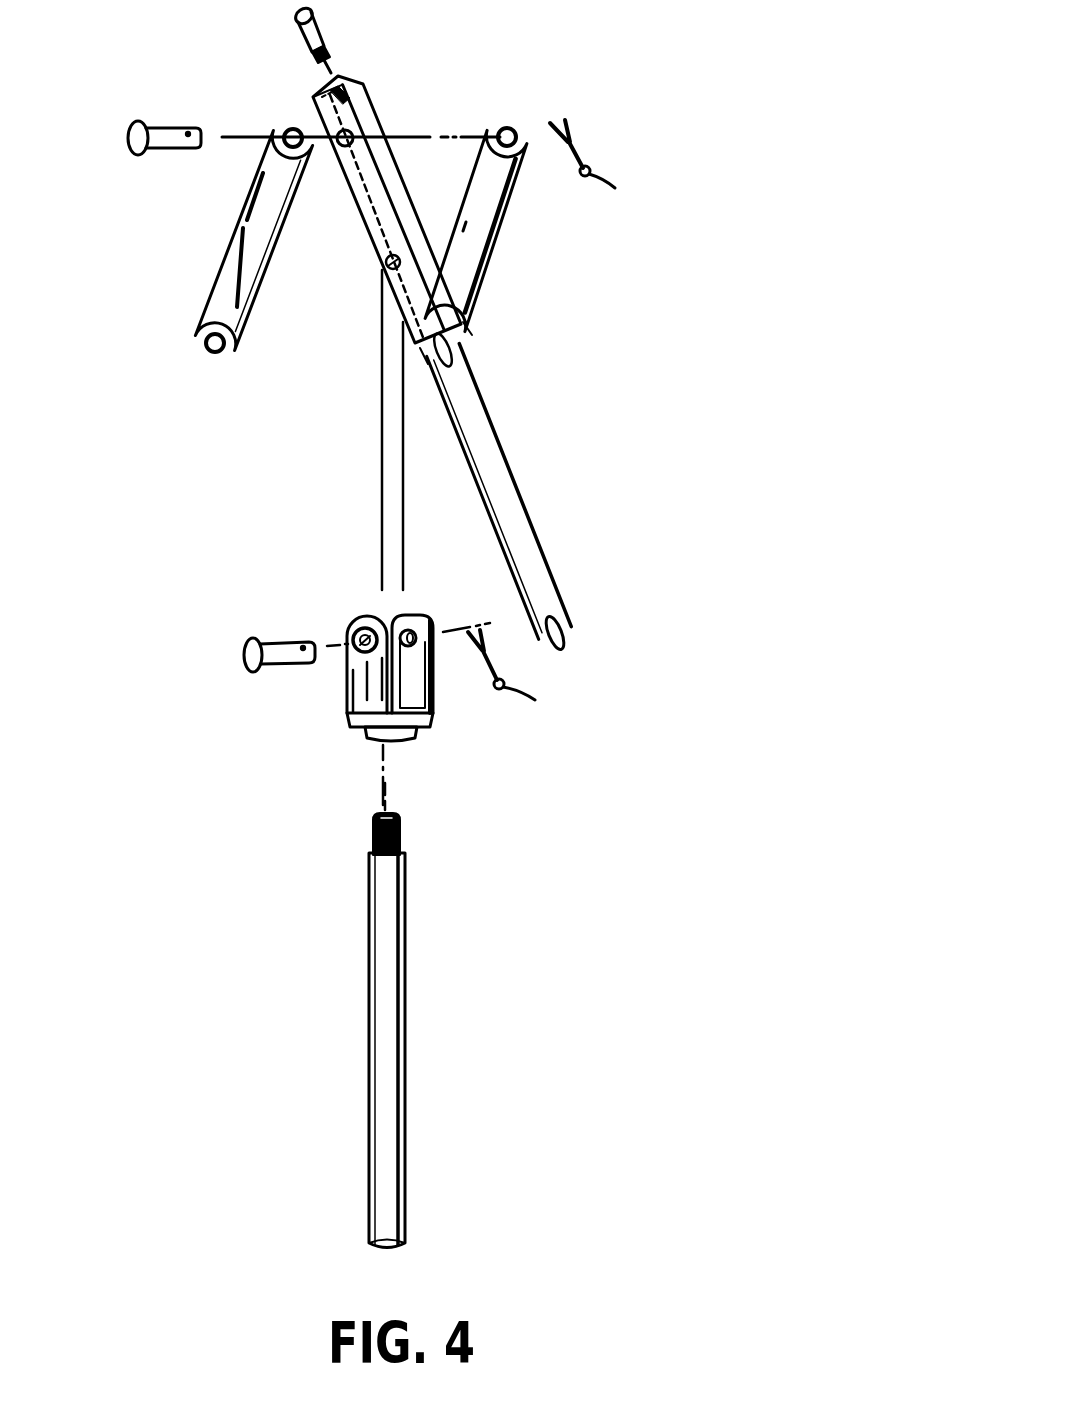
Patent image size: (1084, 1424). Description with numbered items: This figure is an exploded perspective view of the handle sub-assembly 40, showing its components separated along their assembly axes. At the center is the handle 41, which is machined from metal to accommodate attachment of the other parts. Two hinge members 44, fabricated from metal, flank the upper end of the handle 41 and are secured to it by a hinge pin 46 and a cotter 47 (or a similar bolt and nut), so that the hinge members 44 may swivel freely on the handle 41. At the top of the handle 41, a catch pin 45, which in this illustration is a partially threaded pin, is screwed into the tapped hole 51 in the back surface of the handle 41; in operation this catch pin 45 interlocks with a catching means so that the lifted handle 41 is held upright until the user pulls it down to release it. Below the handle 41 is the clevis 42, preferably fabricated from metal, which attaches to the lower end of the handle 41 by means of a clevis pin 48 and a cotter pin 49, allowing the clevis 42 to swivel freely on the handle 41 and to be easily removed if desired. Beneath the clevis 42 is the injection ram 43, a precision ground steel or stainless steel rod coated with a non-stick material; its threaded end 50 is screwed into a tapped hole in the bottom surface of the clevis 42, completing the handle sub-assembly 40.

The handle sub-assembly 40 is at (695, 383).
The handle 41 is at (548, 553).
The clevis 42 is at (433, 705).
The injection ram 43 is at (405, 1043).
The hinge members 44 is at (220, 270).
The catch pin 45 is at (318, 17).
The hinge pin 46 is at (147, 123).
The cotter 47 is at (607, 170).
The clevis pin 48 is at (285, 668).
The cotter pin 49 is at (510, 675).
The threaded end 50 is at (373, 848).
The tapped hole 51 is at (330, 92).